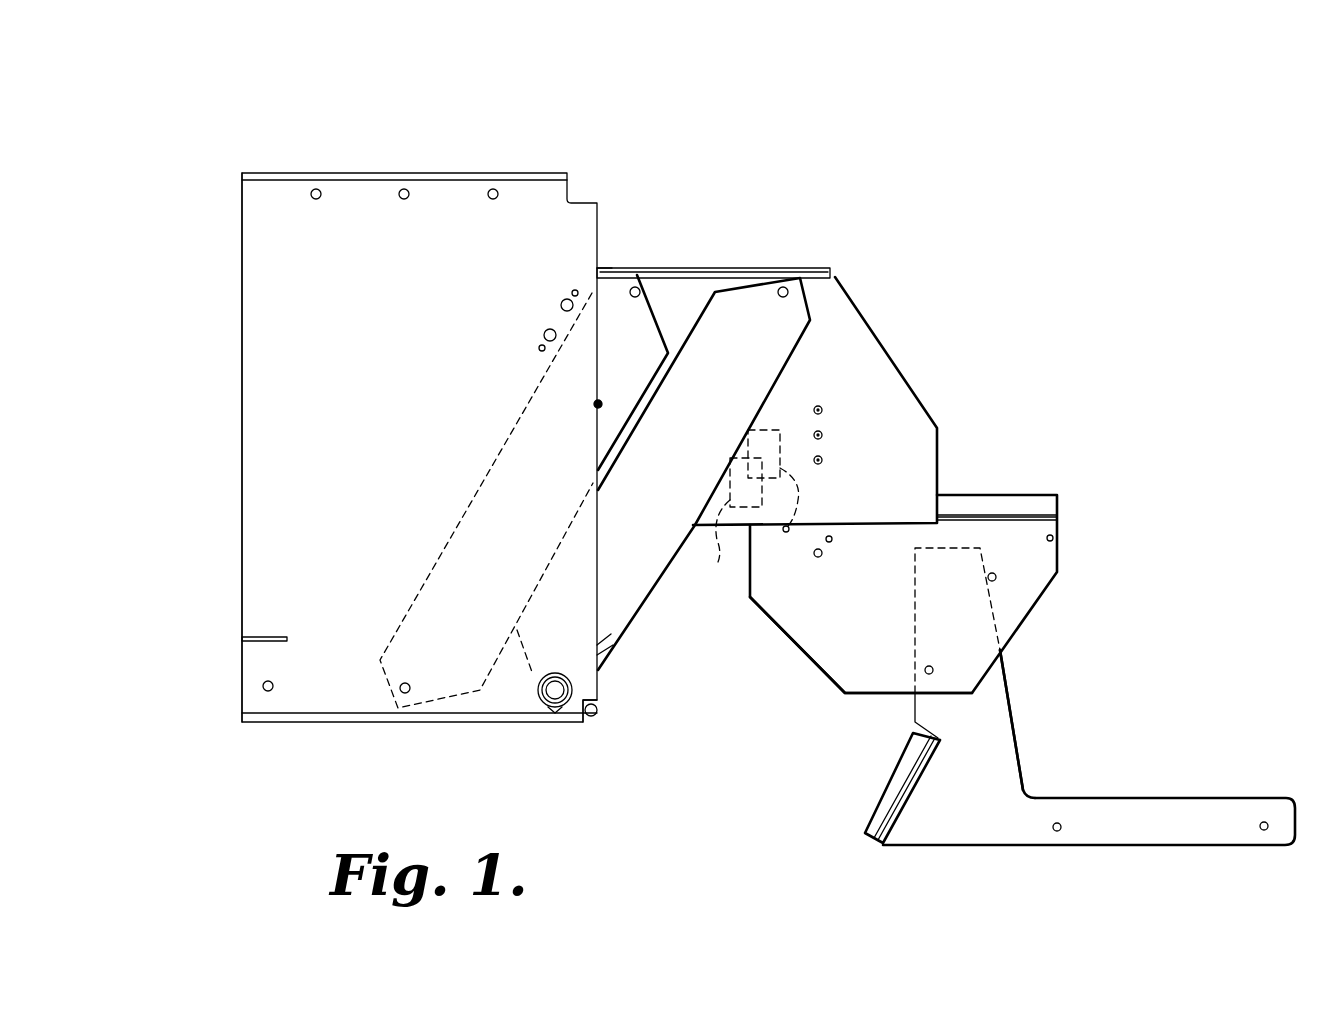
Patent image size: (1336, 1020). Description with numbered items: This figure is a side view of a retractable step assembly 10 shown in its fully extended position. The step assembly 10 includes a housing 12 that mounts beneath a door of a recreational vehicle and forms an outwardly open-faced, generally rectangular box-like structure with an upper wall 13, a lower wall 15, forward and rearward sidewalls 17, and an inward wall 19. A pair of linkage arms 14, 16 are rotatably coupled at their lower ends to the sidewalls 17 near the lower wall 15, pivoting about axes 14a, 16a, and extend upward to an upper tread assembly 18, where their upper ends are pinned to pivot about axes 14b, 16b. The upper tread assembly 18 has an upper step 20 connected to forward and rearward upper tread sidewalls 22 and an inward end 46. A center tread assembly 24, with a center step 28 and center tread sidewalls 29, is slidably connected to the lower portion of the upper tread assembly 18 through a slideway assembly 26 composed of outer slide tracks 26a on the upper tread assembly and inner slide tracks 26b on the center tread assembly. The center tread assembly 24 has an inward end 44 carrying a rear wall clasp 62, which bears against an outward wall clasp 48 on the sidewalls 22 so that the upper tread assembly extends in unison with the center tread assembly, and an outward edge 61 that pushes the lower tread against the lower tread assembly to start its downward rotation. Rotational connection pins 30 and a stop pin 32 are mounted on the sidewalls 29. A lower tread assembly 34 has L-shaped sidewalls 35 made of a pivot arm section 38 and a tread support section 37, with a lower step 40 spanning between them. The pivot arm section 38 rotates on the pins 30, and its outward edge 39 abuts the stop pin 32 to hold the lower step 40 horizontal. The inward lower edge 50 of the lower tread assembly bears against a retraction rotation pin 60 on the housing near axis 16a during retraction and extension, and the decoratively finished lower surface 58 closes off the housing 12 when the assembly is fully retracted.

The step assembly 10 is at (884, 168).
The housing 12 is at (361, 137).
The upper wall 13 is at (477, 171).
The linkage arm 14 is at (666, 300).
The pivot axis 14a is at (411, 689).
The pivot axis 14b is at (636, 287).
The lower wall 15 is at (400, 722).
The linkage arm 16 is at (756, 293).
The pivot axis 16a is at (570, 680).
The pivot axis 16b is at (788, 290).
The sidewall 17 is at (340, 456).
The upper tread assembly 18 is at (898, 343).
The inward wall 19 is at (242, 510).
The upper step 20 is at (705, 268).
The upper tread sidewall 22 is at (888, 426).
The center tread assembly 24 is at (1068, 557).
The slideway assembly 26 is at (868, 530).
The outer slide track 26a is at (950, 494).
The inner slide track 26b is at (1035, 500).
The center step 28 is at (980, 495).
The center tread sidewall 29 is at (878, 624).
The rotational connection pin 30 is at (926, 678).
The stop pin 32 is at (996, 577).
The lower tread assembly 34 is at (1112, 730).
The sidewall 35 is at (978, 799).
The tread support section 37 is at (1180, 836).
The pivot arm section 38 is at (966, 624).
The outward edge 39 is at (992, 606).
The lower step 40 is at (1220, 798).
The center tread assembly inward end 44 is at (748, 590).
The upper tread assembly inward end 46 is at (598, 268).
The outward wall clasp 48 is at (786, 529).
The inward lower edge 50 is at (878, 792).
The lower surface 58 is at (1072, 846).
The retraction rotation pin 60 is at (592, 722).
The outward edge 61 is at (1057, 516).
The rear wall clasp 62 is at (722, 550).